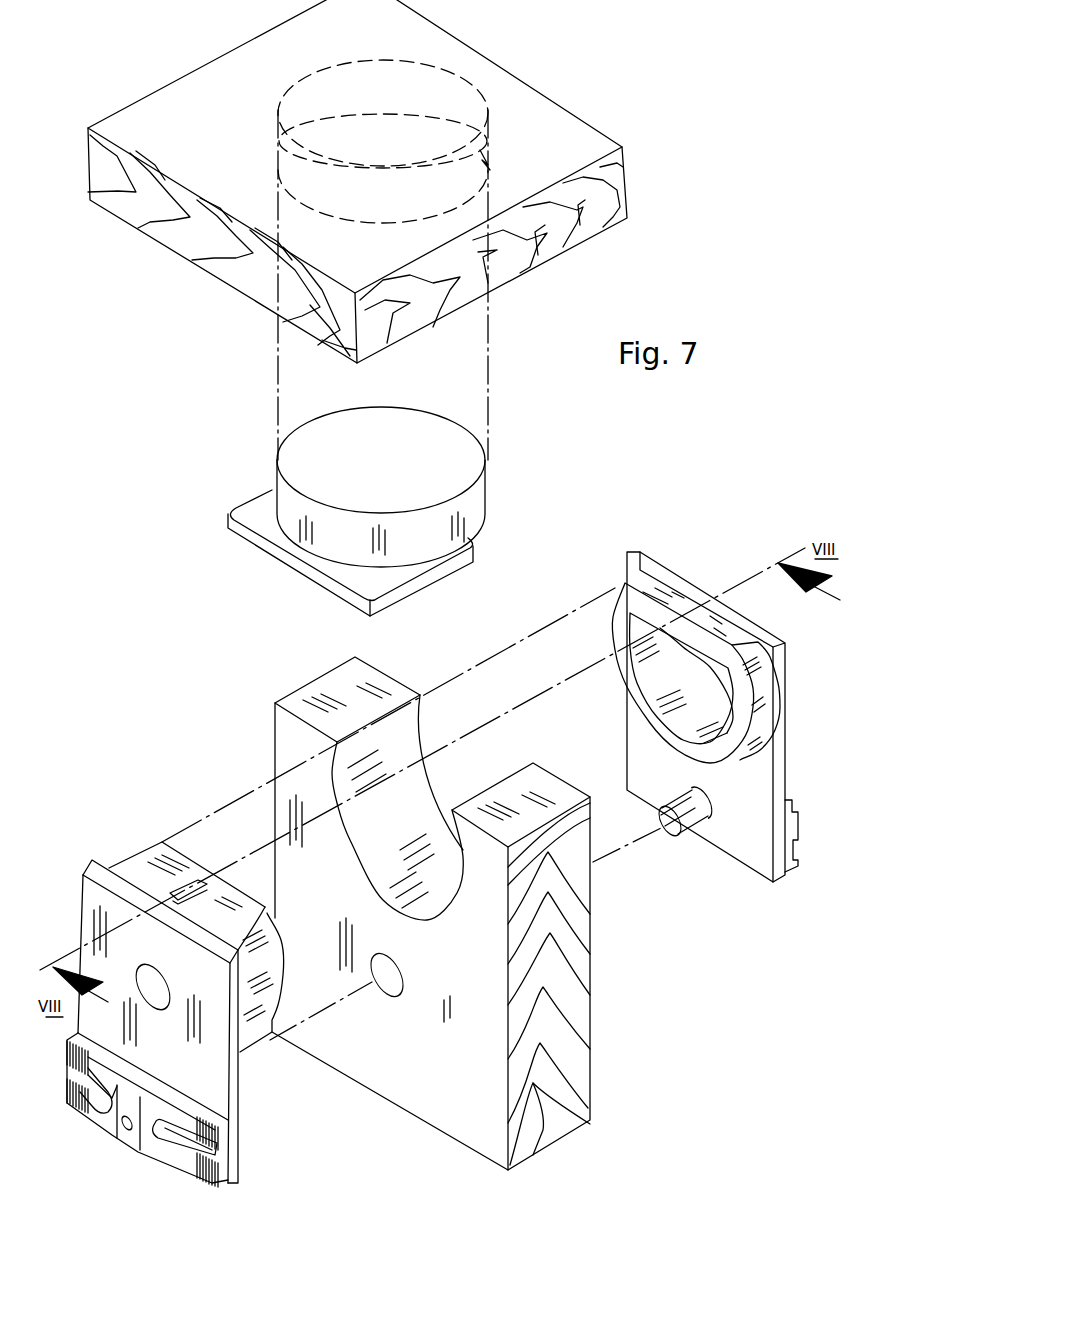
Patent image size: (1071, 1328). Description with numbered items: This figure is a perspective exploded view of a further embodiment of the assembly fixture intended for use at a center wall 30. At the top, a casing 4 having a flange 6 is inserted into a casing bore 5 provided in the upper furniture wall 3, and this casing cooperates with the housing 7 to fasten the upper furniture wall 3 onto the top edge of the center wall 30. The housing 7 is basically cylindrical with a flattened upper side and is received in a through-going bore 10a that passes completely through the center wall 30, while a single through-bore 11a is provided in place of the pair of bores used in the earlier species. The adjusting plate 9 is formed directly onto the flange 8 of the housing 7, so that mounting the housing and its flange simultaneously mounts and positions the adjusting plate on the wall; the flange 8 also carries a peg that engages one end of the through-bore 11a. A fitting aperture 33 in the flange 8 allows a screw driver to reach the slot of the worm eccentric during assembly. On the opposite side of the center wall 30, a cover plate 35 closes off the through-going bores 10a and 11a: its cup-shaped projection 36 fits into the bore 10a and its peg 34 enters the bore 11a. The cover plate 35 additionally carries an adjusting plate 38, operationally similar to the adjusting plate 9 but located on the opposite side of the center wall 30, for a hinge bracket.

The upper furniture wall 3 is at (560, 110).
The casing 4 is at (482, 458).
The casing bore 5 is at (492, 163).
The flange 6 is at (416, 586).
The housing 7 is at (274, 961).
The flange 8 is at (237, 1087).
The adjusting plate 9 is at (127, 1140).
The through-going bore 10a is at (456, 866).
The through-bore 11a is at (404, 972).
The center wall 30 is at (590, 975).
The fitting aperture 33 is at (166, 984).
The peg 34 is at (690, 840).
The cover plate 35 is at (721, 551).
The cup-shaped projection 36 is at (767, 682).
The adjusting plate 38 is at (790, 805).